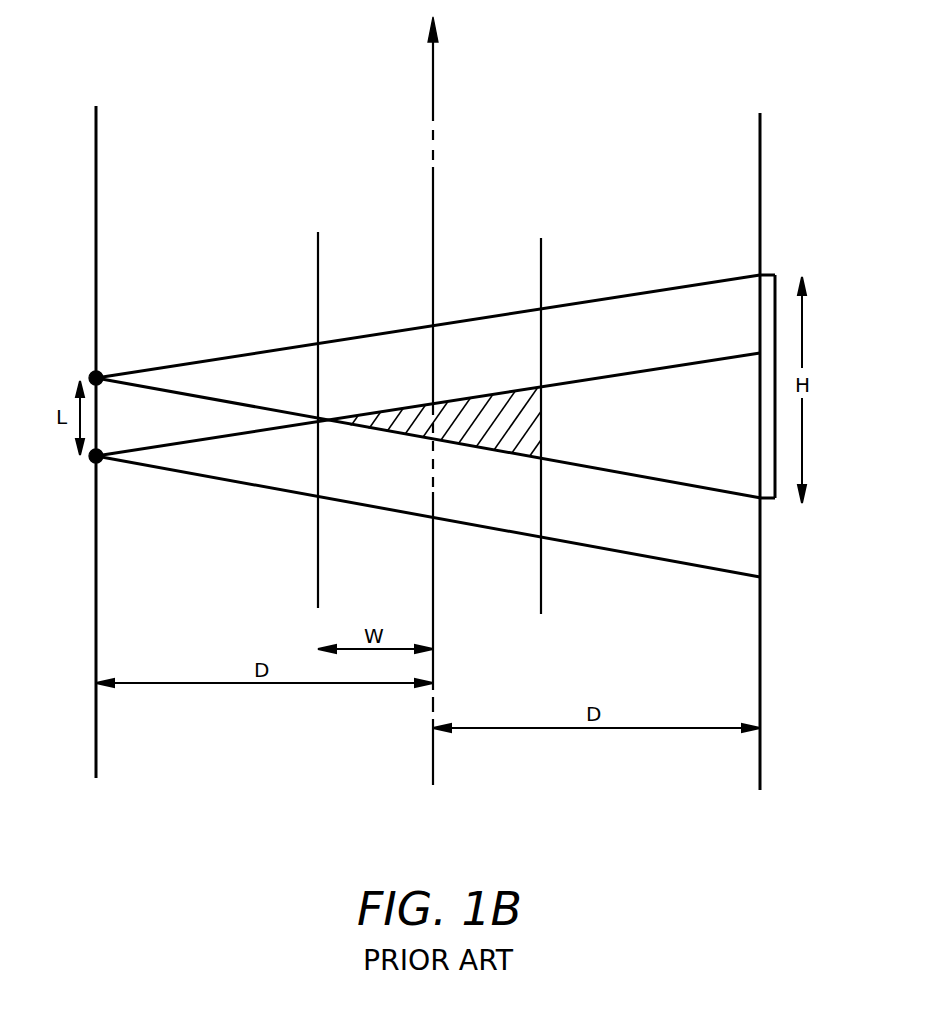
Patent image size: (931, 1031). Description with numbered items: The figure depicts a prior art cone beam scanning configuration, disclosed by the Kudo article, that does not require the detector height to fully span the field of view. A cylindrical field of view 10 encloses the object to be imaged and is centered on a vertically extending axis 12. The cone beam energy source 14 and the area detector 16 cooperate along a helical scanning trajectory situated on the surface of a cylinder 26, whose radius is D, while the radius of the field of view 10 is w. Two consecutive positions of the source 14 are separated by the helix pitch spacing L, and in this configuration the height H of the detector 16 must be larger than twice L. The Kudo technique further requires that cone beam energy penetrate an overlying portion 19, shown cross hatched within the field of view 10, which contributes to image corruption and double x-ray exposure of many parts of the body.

The cylinder 26 is at (96, 188).
The axis 12 is at (437, 72).
The field of view 10 is at (543, 280).
The cone beam energy source 14 is at (90, 375).
The area detector 16 is at (778, 273).
The overlying portion 19 is at (540, 432).